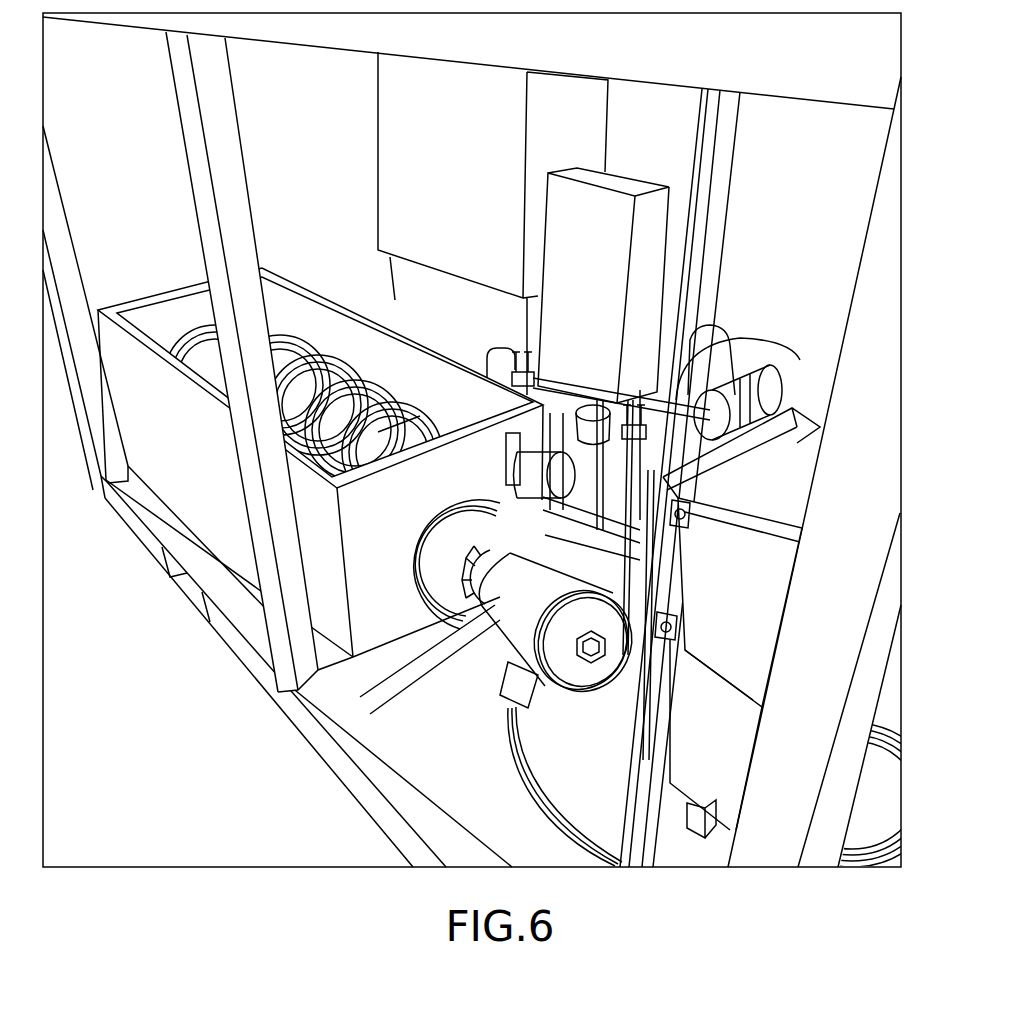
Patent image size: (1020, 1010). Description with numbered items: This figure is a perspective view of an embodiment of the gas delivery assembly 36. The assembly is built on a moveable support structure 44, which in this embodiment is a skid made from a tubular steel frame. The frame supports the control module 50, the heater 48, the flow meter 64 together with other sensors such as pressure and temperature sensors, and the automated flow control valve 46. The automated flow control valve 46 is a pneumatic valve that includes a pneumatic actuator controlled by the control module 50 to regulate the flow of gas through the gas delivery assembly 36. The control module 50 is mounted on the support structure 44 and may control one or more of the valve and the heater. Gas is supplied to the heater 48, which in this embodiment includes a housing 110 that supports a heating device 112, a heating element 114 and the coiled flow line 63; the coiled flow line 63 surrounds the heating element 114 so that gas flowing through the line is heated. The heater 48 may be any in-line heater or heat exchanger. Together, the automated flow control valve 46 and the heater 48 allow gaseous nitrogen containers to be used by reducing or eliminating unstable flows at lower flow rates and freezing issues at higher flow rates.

The gas delivery assembly 36 is at (901, 27).
The support structure 44 is at (765, 78).
The automated flow control valve 46 is at (718, 448).
The heater 48 is at (193, 327).
The control module 50 is at (728, 615).
The coiled flow line 63 is at (400, 423).
The flow meter 64 is at (607, 207).
The housing 110 is at (353, 657).
The heating device 112 is at (518, 623).
The heating element 114 is at (313, 437).